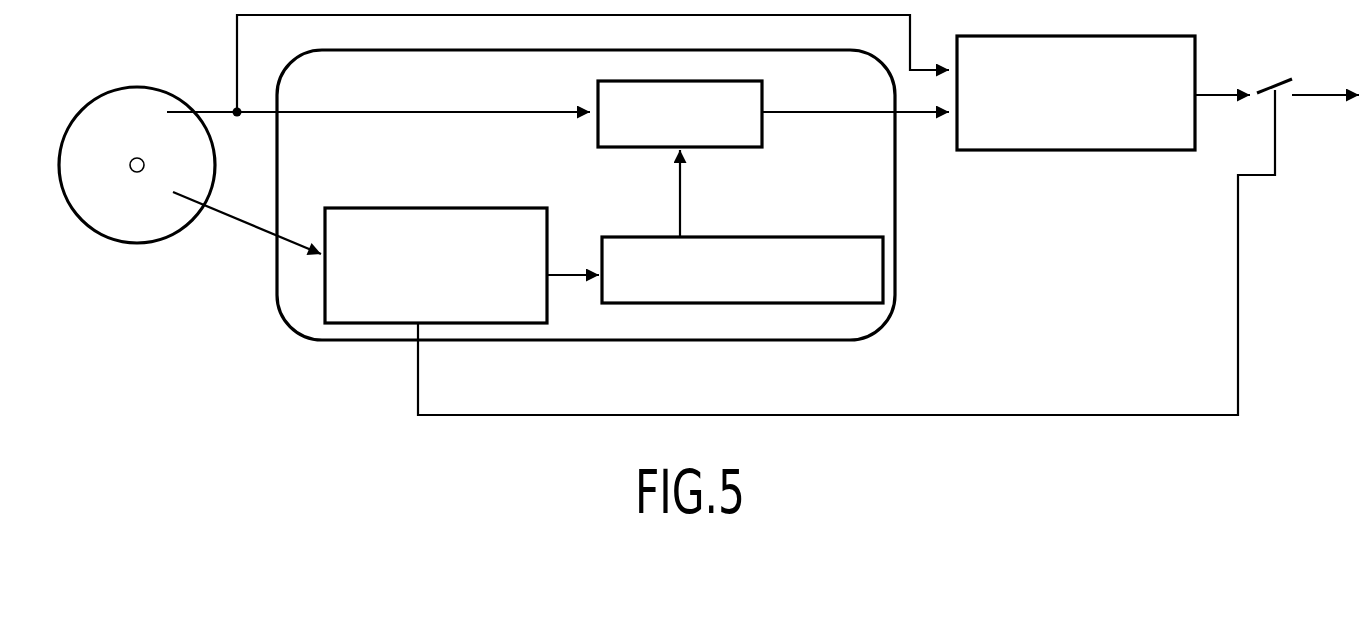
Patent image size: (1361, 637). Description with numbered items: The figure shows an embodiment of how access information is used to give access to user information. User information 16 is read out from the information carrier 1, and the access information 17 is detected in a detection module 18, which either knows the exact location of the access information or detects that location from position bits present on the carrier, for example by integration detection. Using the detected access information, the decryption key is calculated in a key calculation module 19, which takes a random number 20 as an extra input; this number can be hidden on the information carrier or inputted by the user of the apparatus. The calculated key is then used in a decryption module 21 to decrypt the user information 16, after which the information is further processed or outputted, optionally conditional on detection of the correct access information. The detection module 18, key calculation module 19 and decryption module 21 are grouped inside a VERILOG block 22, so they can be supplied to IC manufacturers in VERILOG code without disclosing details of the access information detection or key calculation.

The information carrier 1 is at (109, 225).
The user information 16 is at (212, 110).
The access information 17 is at (249, 228).
The detection module 18 is at (370, 213).
The key calculation module 19 is at (632, 240).
The random number 20 is at (617, 308).
The decryption module 21 is at (763, 89).
The VERILOG block 22 is at (327, 342).